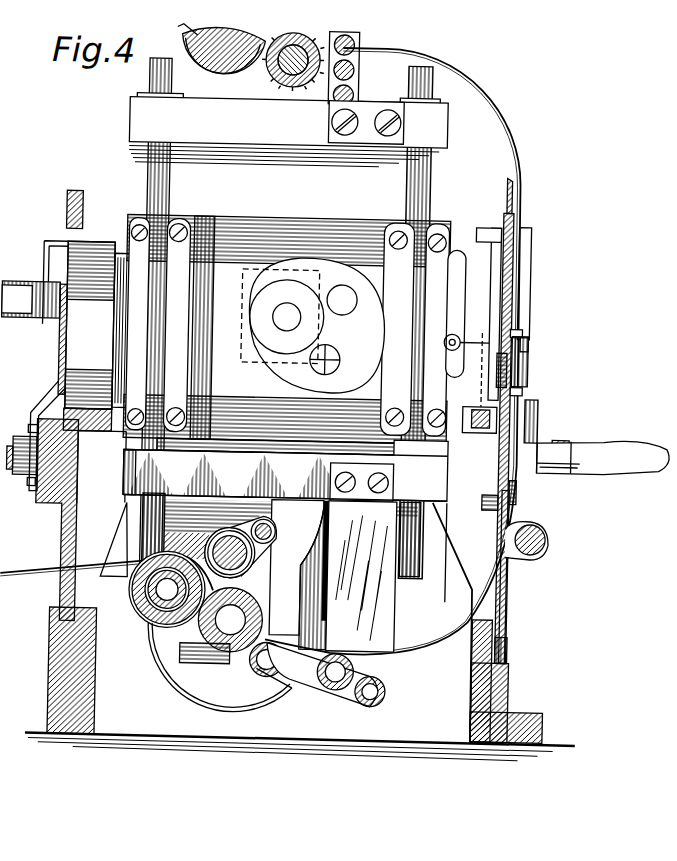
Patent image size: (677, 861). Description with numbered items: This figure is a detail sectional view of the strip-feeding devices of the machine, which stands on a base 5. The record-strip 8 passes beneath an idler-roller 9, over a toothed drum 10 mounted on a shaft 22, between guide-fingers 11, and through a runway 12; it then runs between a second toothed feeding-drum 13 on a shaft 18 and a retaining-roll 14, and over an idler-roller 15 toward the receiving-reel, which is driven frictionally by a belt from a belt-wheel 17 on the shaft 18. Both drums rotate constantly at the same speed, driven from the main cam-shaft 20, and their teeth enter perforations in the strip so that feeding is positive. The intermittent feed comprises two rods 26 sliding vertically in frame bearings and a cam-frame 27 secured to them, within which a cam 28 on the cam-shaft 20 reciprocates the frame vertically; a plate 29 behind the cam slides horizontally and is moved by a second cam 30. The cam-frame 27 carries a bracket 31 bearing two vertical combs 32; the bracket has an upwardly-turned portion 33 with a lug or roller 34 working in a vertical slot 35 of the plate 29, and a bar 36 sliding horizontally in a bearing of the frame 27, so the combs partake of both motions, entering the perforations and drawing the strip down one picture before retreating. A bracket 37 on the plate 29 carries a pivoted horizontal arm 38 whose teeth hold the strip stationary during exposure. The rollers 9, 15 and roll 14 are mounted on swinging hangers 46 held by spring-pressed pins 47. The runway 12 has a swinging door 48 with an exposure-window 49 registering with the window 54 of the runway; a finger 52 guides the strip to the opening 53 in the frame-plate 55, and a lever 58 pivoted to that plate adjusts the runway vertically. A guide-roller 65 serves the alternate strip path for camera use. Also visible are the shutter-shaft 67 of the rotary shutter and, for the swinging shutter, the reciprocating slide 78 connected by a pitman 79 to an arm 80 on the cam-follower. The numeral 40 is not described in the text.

The base 5 is at (288, 133).
The record-strip 8 is at (436, 671).
The idler-roller 9 is at (210, 64).
The toothed drum 10 is at (275, 80).
The guide-fingers 11 is at (352, 81).
The runway 12 is at (503, 204).
The second toothed feeding-drum 13 is at (226, 655).
The retaining-roll 14 is at (292, 698).
The idler-roller 15 is at (157, 628).
The belt-wheel 17 is at (252, 697).
The shaft 18 is at (180, 660).
The main cam-shaft 20 is at (283, 316).
The shaft 22 is at (286, 76).
The rods 26 is at (143, 184).
The cam-frame 27 is at (287, 336).
The cam 28 is at (341, 329).
The plate 29 is at (206, 304).
The second cam 30 is at (248, 321).
The bracket 31 is at (483, 443).
The combs 32 is at (482, 371).
The upwardly-turned portion 33 is at (521, 330).
The lug or roller 34 is at (454, 333).
The vertical slot 35 is at (455, 250).
The bar 36 is at (471, 431).
The bracket 37 is at (543, 465).
The horizontal arm 38 is at (570, 441).
The handle 40 is at (603, 458).
The swinging hangers 46 is at (210, 551).
The spring-pressed pins 47 is at (409, 706).
The swinging door 48 is at (536, 425).
The exposure-window 49 is at (527, 360).
The finger 52 is at (518, 490).
The opening 53 is at (511, 588).
The window 54 is at (520, 338).
The frame-plate 55 is at (512, 645).
The lever 58 is at (492, 510).
The guide-roller 65 is at (548, 548).
The shutter-shaft 67 is at (93, 310).
The reciprocating slide 78 is at (35, 483).
The pitman 79 is at (39, 410).
The arm 80 is at (60, 352).